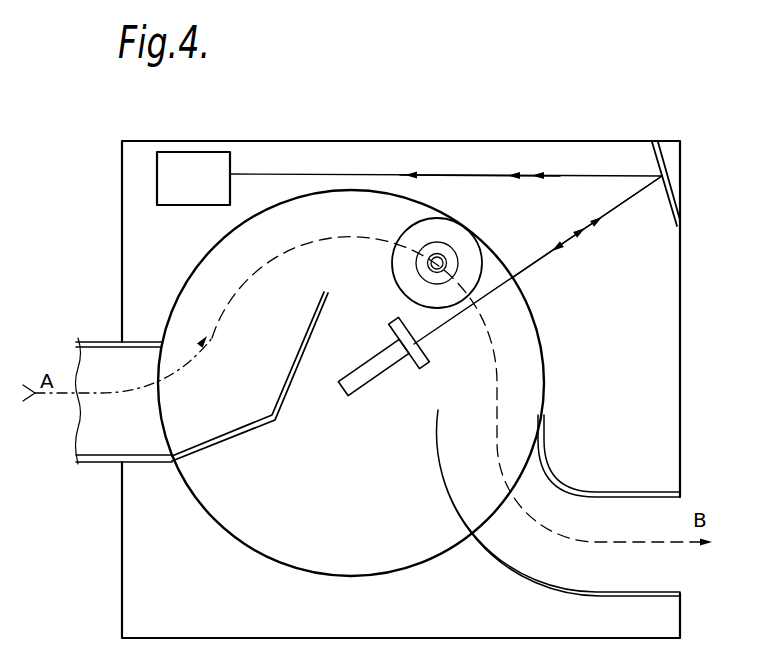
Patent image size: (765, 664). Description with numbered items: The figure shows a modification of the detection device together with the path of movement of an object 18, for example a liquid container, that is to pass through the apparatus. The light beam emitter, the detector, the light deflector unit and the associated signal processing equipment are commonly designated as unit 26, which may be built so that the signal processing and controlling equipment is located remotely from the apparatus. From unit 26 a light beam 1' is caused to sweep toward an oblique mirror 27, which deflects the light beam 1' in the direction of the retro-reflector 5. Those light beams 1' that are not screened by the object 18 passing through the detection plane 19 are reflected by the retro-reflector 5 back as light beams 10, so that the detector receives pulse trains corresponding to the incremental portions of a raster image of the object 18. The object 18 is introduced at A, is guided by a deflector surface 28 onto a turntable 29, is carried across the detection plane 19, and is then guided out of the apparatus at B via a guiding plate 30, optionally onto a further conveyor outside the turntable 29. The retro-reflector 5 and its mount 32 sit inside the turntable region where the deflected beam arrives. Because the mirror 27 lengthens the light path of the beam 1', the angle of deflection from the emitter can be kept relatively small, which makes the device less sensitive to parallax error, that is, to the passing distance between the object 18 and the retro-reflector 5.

The light beam 1' is at (446, 215).
The retro-reflector 5 is at (467, 356).
The light beams 10 is at (523, 162).
The object 18 is at (463, 248).
The detection plane 19 is at (530, 280).
The unit 26 is at (202, 165).
The oblique mirror 27 is at (664, 158).
The deflector surface 28 is at (247, 428).
The turntable 29 is at (307, 553).
The guiding plate 30 is at (515, 572).
The mirror holder 32 is at (424, 352).